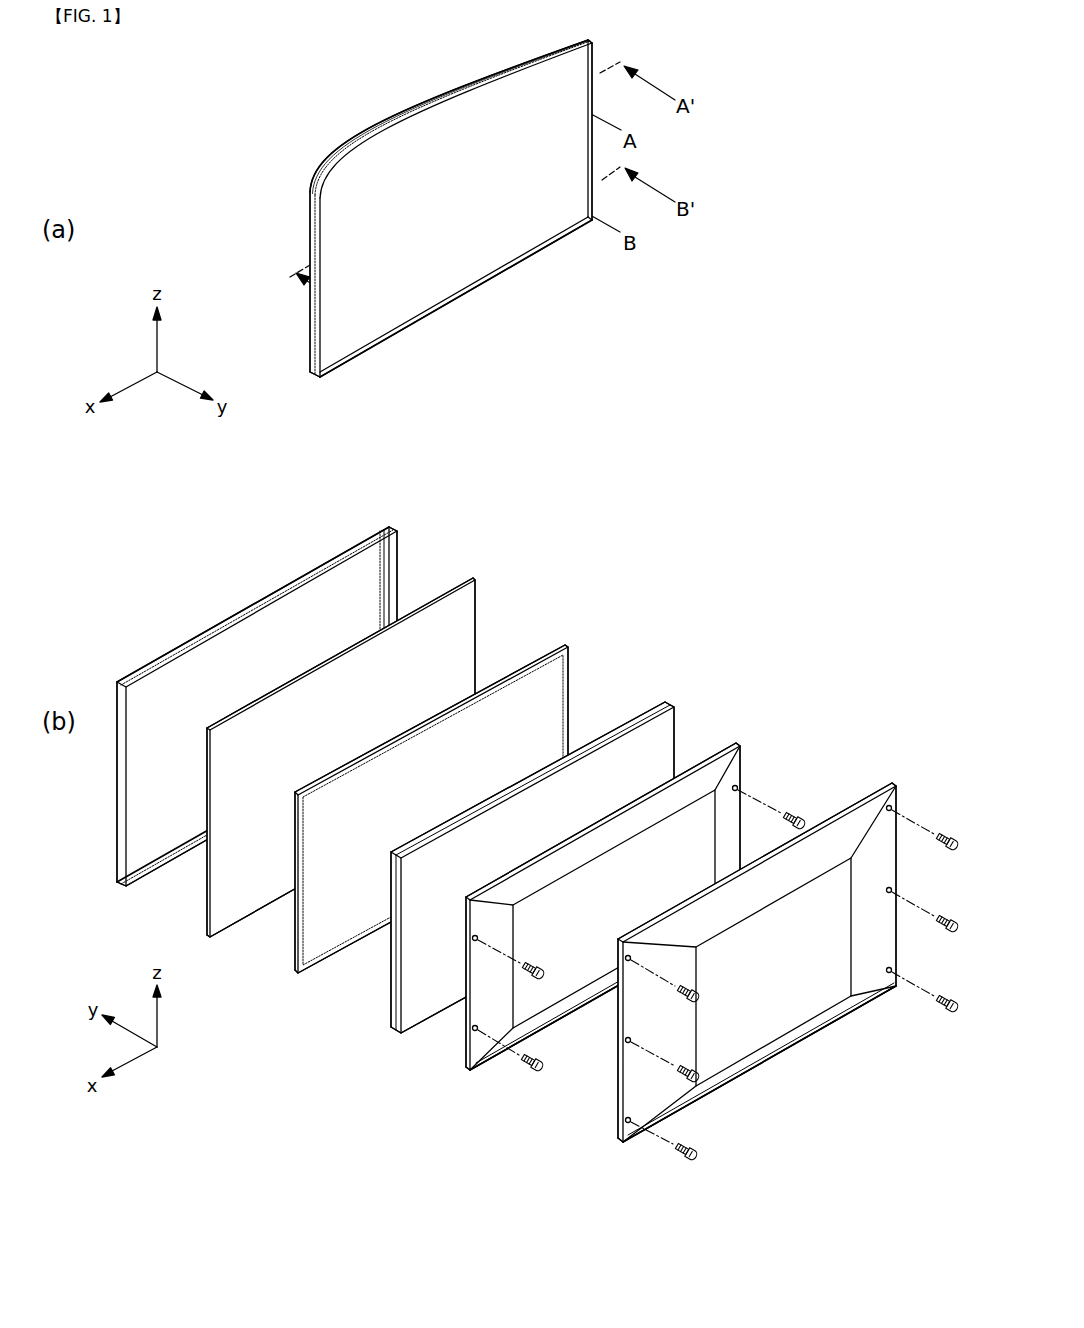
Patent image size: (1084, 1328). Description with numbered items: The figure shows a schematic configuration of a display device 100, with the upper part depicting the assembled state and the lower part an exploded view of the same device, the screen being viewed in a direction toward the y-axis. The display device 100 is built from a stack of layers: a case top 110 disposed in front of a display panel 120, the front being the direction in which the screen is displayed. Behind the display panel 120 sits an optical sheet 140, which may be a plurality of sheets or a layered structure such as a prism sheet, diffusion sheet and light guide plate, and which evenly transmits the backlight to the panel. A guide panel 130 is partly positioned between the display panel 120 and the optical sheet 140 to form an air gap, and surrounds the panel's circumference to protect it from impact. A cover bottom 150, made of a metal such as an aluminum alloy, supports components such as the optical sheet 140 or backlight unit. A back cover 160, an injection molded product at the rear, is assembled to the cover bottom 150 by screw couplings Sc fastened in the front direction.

The display device 100 is at (196, 516).
The case top 110 is at (468, 293).
The display panel 120 is at (533, 212).
The guide panel 130 is at (502, 78).
The optical sheet 140 is at (668, 702).
The cover bottom 150 is at (741, 744).
The back cover 160 is at (893, 785).
The screw coupling Sc is at (530, 1068).